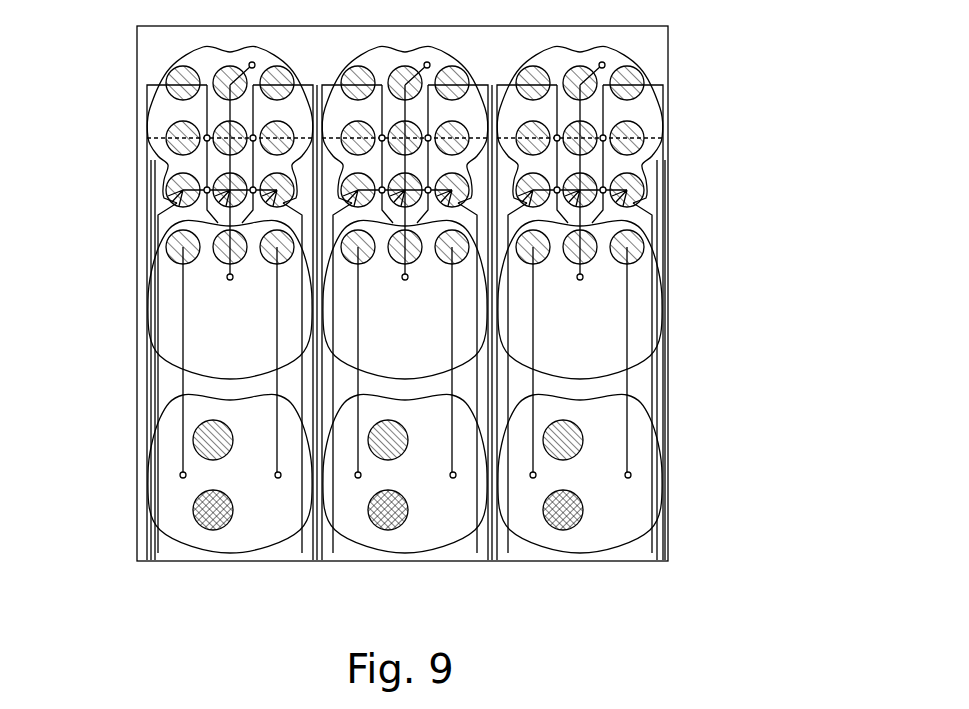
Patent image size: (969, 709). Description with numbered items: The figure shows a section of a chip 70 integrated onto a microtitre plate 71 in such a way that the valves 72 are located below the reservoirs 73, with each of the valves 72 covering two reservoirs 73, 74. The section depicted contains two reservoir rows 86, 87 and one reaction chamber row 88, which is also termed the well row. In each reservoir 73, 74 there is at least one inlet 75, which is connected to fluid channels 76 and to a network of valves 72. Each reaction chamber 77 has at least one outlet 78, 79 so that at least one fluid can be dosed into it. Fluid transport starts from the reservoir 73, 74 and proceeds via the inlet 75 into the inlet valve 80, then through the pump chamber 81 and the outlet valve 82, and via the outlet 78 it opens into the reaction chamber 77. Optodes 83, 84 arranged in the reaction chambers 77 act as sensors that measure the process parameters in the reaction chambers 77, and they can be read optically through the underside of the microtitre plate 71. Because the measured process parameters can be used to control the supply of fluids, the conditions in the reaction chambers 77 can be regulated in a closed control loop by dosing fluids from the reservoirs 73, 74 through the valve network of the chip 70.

The chip 70 is at (680, 122).
The microtitre plate 71 is at (668, 392).
The valves 72 is at (628, 123).
The reservoir 73 is at (634, 299).
The reservoir 74 is at (639, 354).
The inlet 75 is at (566, 316).
The fluid channels 76 is at (668, 345).
The reaction chamber 77 is at (634, 473).
The outlet 78 is at (571, 472).
The outlet 79 is at (607, 551).
The inlet valve 80 is at (685, 254).
The pump chamber 81 is at (652, 192).
The outlet valve 82 is at (540, 274).
The optode 83 is at (577, 429).
The optode 84 is at (554, 560).
The reservoir row 86 is at (177, 124).
The reservoir row 87 is at (177, 299).
The reaction chamber row 88 is at (177, 473).